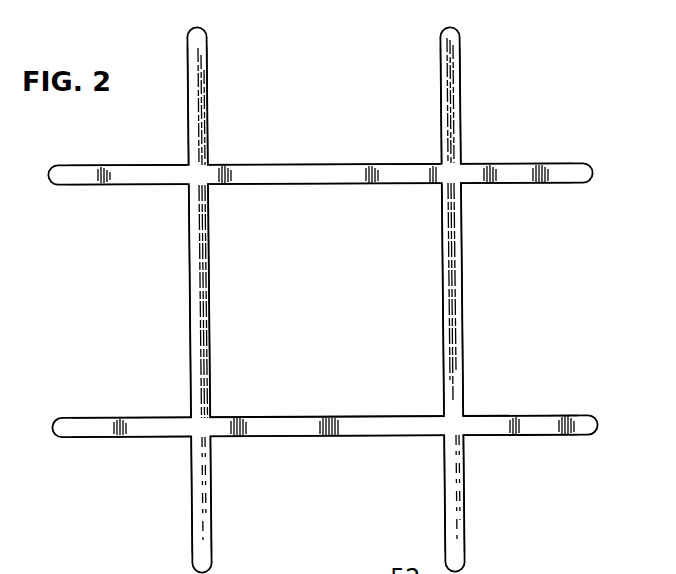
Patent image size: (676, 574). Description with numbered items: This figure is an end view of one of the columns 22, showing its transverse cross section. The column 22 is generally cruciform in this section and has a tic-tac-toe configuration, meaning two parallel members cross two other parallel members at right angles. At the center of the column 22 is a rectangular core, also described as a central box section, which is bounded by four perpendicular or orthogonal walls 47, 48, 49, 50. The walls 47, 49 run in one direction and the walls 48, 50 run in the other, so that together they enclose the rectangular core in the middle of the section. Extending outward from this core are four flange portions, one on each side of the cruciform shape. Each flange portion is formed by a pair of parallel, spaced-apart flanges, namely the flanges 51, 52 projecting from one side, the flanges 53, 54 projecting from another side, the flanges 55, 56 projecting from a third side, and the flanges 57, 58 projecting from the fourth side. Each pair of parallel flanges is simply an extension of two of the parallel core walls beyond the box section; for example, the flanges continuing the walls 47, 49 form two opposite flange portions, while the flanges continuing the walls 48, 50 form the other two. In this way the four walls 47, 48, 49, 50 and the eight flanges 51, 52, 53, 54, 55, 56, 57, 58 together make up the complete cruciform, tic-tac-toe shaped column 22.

The column 22 is at (455, 70).
The wall 47 is at (280, 170).
The wall 48 is at (458, 268).
The wall 49 is at (270, 420).
The wall 50 is at (189, 297).
The flange 51 is at (203, 85).
The flange 52 is at (458, 117).
The flange 53 is at (559, 182).
The flange 54 is at (538, 419).
The flange 55 is at (460, 463).
The flange 56 is at (194, 492).
The flange 57 is at (131, 434).
The flange 58 is at (120, 178).